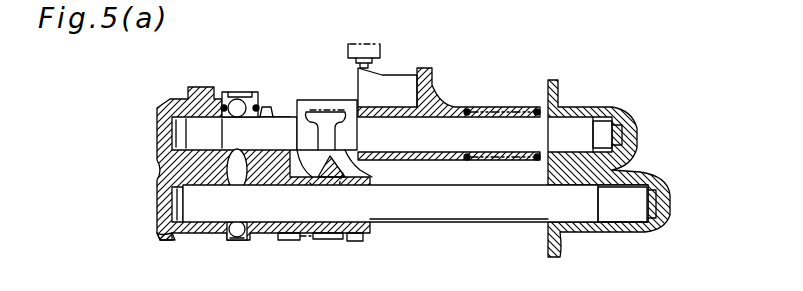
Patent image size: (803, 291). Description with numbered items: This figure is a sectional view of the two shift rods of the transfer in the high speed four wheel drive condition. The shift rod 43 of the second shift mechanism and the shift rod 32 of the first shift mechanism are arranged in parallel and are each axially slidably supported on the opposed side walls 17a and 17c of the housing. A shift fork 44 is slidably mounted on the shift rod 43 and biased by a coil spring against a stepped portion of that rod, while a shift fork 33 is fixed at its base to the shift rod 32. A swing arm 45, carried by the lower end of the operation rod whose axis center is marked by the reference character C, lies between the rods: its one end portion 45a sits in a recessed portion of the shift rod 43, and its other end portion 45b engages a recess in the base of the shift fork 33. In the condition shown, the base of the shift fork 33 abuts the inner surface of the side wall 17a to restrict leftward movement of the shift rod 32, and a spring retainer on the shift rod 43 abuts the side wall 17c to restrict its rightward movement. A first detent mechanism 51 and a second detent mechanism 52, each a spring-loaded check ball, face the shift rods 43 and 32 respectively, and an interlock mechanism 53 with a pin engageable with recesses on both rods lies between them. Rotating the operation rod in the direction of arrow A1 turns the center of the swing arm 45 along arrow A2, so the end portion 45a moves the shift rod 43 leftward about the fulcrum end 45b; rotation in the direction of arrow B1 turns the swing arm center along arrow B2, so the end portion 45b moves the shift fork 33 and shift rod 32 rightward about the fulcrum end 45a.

The side wall 17a is at (173, 242).
The side wall 17c is at (648, 170).
The shift rod 32 is at (503, 212).
The shift fork 33 is at (370, 228).
The shift rod 43 is at (580, 123).
The shift fork 44 is at (437, 95).
The swing arm 45 is at (345, 162).
The one end portion of swing arm 45a is at (334, 110).
The other end portion of swing arm 45b is at (279, 245).
The first detent mechanism 51 is at (248, 101).
The second detent mechanism 52 is at (234, 240).
The interlock mechanism 53 is at (178, 168).
The arrow indicating rotation direction of operation rod A1 is at (345, 258).
The arrow indicating rotation direction of swing arm center A2 is at (302, 193).
The arrow indicating rotation direction of operation rod B1 is at (318, 259).
The arrow indicating rotation direction of swing arm center B2 is at (352, 190).
The center of the axis of operation rod C is at (327, 247).